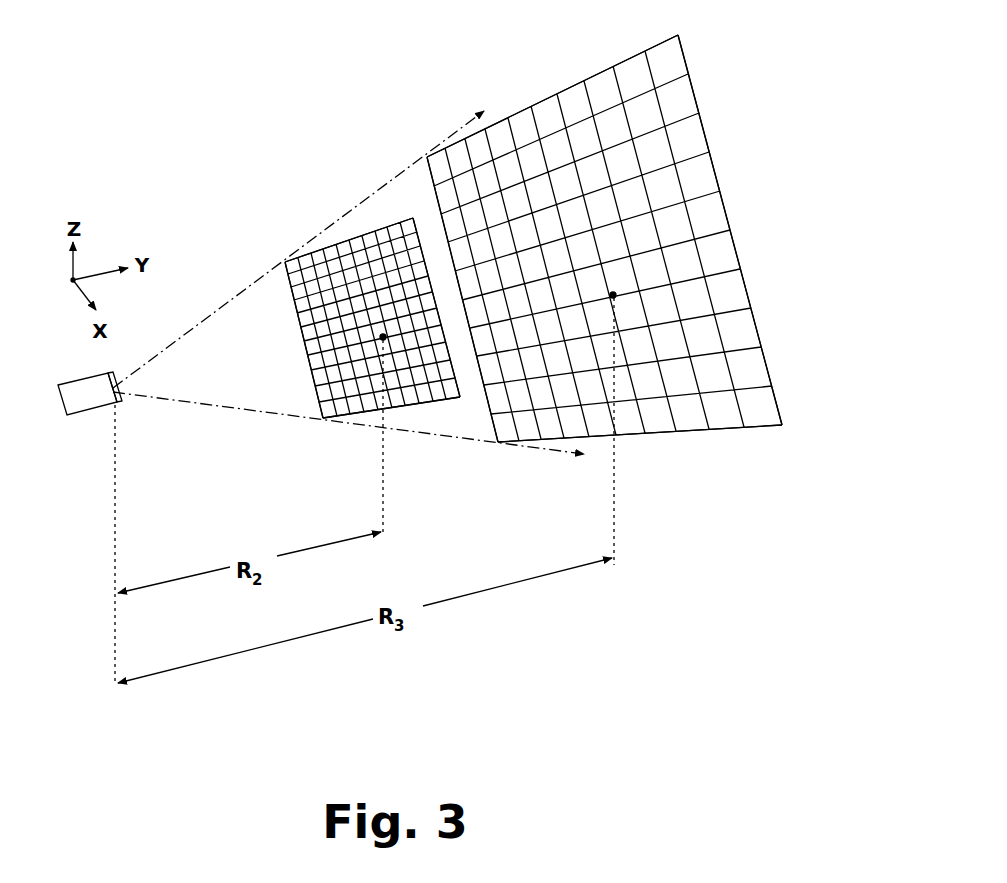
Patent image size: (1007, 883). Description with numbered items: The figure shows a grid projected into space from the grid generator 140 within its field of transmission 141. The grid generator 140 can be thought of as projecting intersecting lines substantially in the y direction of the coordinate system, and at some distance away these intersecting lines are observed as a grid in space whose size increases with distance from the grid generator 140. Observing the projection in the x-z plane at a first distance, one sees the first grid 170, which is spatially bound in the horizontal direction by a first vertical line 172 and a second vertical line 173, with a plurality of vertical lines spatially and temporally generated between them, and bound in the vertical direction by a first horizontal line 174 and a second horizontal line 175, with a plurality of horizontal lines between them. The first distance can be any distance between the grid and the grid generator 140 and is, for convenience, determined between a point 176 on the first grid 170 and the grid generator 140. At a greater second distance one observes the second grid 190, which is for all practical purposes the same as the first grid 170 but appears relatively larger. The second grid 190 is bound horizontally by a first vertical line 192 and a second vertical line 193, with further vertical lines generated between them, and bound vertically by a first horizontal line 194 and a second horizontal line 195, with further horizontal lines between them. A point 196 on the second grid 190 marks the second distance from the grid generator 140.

The grid generator 140 is at (97, 420).
The field of transmission 141 is at (202, 377).
The first grid 170 is at (371, 226).
The first vertical line 172 is at (287, 290).
The second vertical line 173 is at (420, 245).
The first horizontal line 174 is at (335, 248).
The second horizontal line 175 is at (420, 403).
The point on the first grid 176 is at (380, 338).
The second grid 190 is at (715, 159).
The first vertical line of the second grid 192 is at (488, 400).
The second vertical line of the second grid 193 is at (695, 93).
The first horizontal line of the second grid 194 is at (524, 104).
The second horizontal line of the second grid 195 is at (700, 426).
The point on the second grid 196 is at (618, 292).